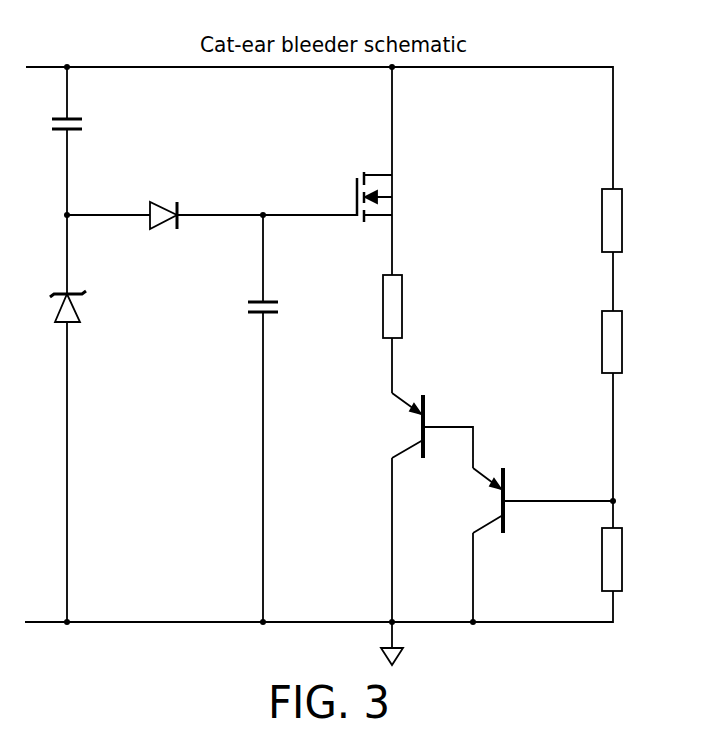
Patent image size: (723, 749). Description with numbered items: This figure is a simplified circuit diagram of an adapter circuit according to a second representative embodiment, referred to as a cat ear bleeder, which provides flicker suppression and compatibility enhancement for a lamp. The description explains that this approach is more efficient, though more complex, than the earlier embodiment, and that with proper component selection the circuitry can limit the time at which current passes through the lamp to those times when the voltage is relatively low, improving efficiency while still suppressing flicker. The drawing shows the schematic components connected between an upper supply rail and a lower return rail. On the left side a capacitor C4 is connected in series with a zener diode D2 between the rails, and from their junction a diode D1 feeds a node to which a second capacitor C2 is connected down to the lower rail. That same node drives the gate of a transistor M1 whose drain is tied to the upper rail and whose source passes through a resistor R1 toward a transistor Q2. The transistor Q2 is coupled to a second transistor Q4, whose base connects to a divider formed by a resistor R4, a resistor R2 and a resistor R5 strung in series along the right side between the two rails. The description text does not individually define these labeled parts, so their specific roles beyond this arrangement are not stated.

The capacitor C4 10n C4 is at (89, 126).
The diode D1 is at (165, 199).
The zener diode D2 is at (83, 307).
The capacitor C2 10n C2 is at (282, 308).
The MOSFET M1 is at (394, 197).
The resistor R1 47 R1 is at (411, 306).
The PNP transistor Q2 is at (418, 430).
The PNP transistor Q4 is at (474, 500).
The resistor R4 220k R4 is at (642, 220).
The resistor R2 220k R2 is at (642, 342).
The resistor R5 47k R5 is at (635, 559).